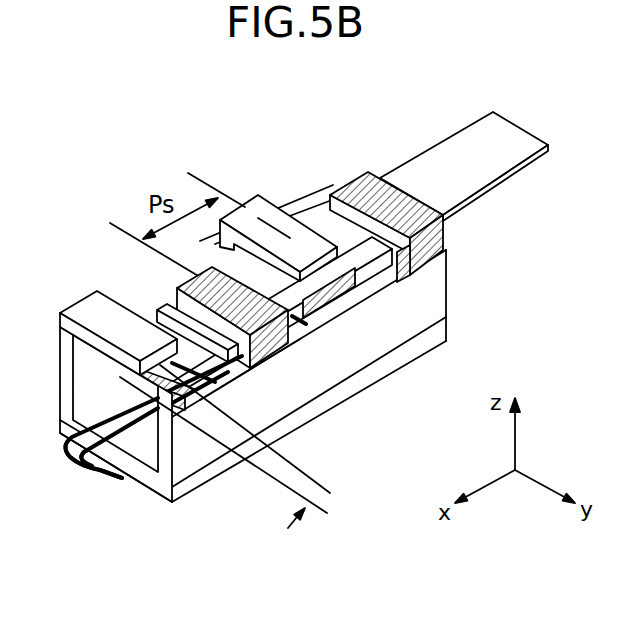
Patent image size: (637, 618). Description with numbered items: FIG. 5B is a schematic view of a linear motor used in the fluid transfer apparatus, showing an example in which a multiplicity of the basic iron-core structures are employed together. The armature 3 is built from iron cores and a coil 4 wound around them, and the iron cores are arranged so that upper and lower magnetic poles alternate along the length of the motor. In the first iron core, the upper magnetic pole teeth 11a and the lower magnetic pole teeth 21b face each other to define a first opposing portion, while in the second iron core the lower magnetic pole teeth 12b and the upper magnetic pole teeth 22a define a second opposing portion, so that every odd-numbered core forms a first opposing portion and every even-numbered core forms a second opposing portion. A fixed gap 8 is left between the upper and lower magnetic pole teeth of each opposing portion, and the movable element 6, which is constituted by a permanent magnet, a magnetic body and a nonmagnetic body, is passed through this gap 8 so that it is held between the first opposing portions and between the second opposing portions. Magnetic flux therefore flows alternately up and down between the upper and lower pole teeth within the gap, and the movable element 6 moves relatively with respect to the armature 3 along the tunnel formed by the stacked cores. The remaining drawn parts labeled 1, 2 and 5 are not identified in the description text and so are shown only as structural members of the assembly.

The frame 1 is at (70, 373).
The base 2 is at (167, 438).
The armature 3 is at (447, 293).
The coil 4 is at (92, 478).
The bottom plate 5 is at (143, 470).
The movable element 6 is at (513, 177).
The gap 8 is at (234, 452).
The upper magnetic pole teeth 11a is at (105, 322).
The lower magnetic pole teeth 12b is at (168, 306).
The lower magnetic pole teeth 21b is at (290, 433).
The upper magnetic pole teeth 22a is at (323, 320).